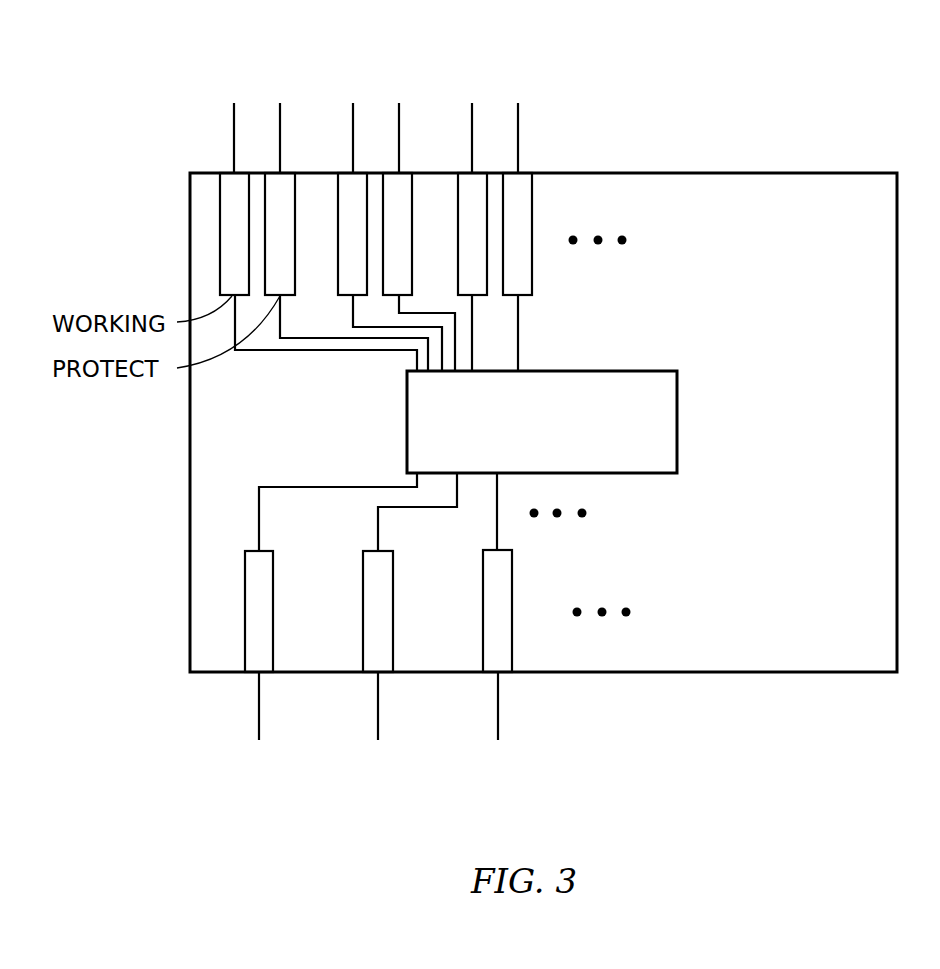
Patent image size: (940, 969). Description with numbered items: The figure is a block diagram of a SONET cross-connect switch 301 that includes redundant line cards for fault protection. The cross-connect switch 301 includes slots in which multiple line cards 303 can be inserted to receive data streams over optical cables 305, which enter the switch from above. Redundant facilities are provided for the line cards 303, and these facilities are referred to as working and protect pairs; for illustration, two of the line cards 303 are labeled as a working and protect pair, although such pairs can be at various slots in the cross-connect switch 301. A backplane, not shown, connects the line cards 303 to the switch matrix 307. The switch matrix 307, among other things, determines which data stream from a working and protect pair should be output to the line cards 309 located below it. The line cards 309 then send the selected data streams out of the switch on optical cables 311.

The cross-connect switch 301 is at (838, 229).
The line cards 303 is at (182, 173).
The optical cables 305 is at (519, 97).
The switch matrix 307 is at (625, 371).
The line cards 309 is at (180, 548).
The optical cables 311 is at (498, 752).